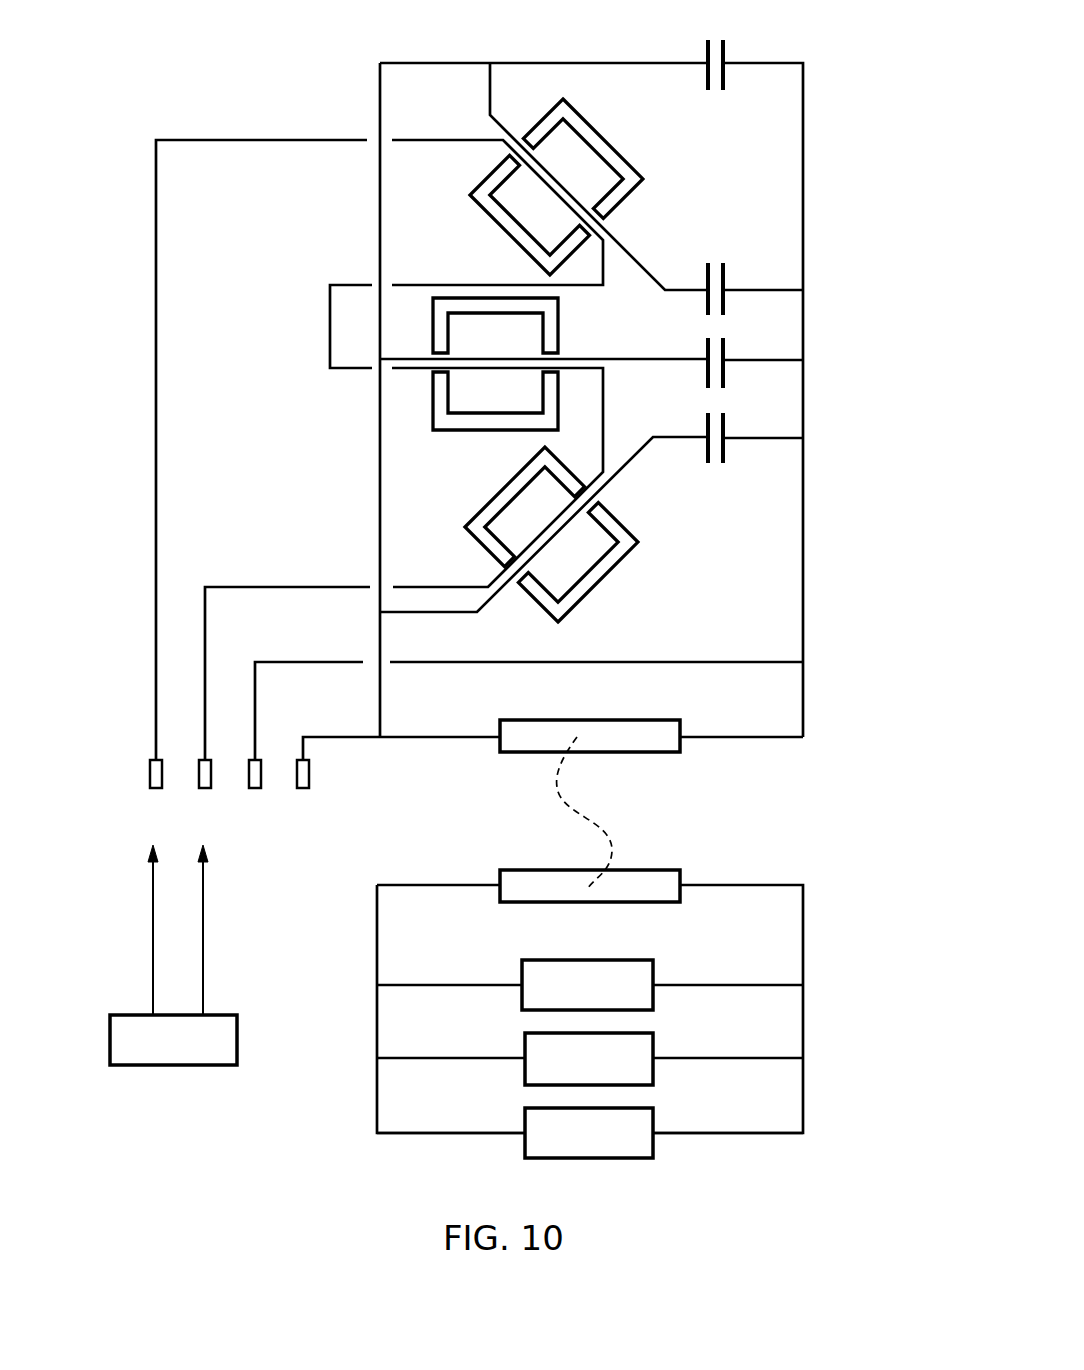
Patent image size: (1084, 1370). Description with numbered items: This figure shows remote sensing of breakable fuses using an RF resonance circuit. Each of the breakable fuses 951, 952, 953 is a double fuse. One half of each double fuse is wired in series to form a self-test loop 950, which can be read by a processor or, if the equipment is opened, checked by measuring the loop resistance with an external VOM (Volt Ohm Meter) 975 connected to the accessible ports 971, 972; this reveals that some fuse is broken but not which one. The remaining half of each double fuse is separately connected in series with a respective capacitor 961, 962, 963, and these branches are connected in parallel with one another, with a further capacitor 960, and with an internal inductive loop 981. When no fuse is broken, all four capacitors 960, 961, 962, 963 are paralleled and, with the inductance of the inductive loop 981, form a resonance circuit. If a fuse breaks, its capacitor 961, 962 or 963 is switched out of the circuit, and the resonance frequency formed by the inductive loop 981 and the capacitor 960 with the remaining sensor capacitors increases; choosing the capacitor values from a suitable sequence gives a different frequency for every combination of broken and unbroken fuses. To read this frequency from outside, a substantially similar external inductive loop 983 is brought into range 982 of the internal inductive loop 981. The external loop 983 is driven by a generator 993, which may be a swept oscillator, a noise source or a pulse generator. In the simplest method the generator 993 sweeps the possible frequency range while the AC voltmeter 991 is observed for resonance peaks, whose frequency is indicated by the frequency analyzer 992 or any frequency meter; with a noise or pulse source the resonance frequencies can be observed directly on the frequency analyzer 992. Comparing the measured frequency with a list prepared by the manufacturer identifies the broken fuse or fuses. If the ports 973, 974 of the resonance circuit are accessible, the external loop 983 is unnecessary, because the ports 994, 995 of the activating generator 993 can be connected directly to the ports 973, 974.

The loop 950 is at (328, 323).
The breakable fuse 951 is at (577, 170).
The breakable fuse 952 is at (507, 388).
The breakable fuse 953 is at (567, 562).
The capacitor 960 is at (737, 43).
The capacitor 961 is at (735, 273).
The capacitor 962 is at (735, 350).
The capacitor 963 is at (735, 427).
The port 971 is at (150, 790).
The port 972 is at (199, 792).
The port 973 is at (255, 790).
The port 974 is at (303, 788).
The VOM (Volt Ohm Meter) 975 is at (222, 1025).
The inductive loop 981 is at (627, 740).
The range 982 is at (607, 815).
The inductive loop 983 is at (652, 882).
The AC voltmeter 991 is at (643, 978).
The frequency analyzer 992 is at (627, 1048).
The generator 993 is at (642, 1127).
The port 994 is at (457, 1133).
The port 995 is at (725, 1127).